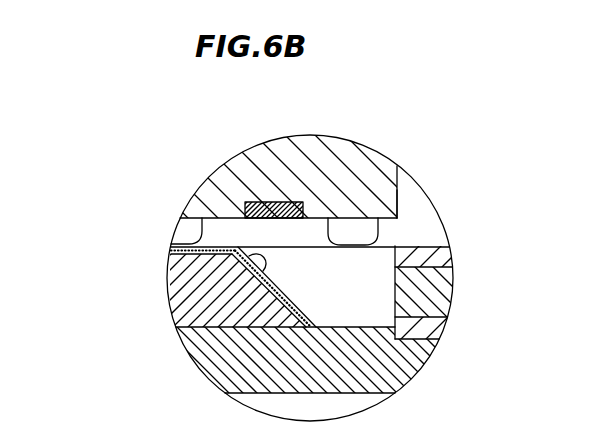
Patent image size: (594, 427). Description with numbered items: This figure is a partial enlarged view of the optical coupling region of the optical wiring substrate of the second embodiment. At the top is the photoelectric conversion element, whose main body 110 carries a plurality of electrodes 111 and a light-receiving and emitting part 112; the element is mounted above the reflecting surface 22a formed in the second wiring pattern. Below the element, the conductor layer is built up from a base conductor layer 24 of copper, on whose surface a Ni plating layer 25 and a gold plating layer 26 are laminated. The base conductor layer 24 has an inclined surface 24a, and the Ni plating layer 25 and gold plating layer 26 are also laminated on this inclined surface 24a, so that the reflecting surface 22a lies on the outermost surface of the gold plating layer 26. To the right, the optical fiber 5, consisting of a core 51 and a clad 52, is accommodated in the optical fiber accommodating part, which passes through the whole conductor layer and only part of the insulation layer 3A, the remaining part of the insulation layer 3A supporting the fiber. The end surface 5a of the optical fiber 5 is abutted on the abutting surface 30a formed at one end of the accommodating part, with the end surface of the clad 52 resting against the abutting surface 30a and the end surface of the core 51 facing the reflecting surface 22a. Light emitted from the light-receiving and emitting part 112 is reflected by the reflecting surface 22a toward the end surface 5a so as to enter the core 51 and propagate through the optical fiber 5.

The main body 110 is at (205, 200).
The light-receiving and emitting part 112 is at (252, 203).
The reflecting surface 22a is at (243, 253).
The gold plating layer 26 is at (376, 218).
The electrode 111 is at (362, 232).
The end surface 5a is at (444, 207).
The base conductor layer 24 is at (180, 272).
The Ni plating layer 25 is at (290, 305).
The inclined surface 24a is at (238, 258).
The insulation layer 3A is at (205, 347).
The optical fiber 5 is at (521, 262).
The core 51 is at (438, 289).
The clad 52 is at (433, 326).
The abutting surface 30a is at (412, 339).